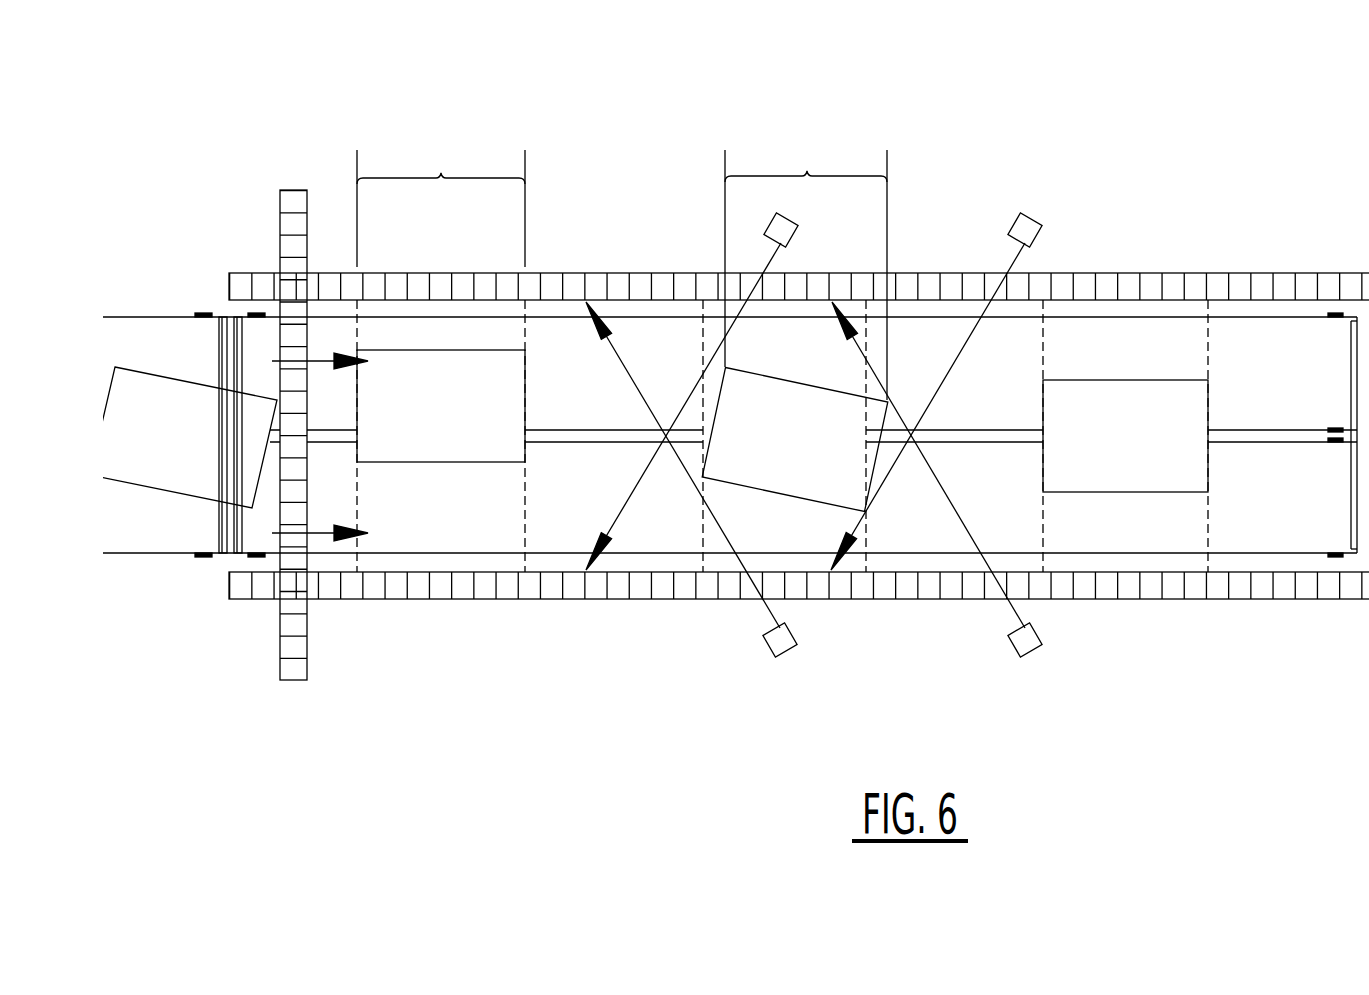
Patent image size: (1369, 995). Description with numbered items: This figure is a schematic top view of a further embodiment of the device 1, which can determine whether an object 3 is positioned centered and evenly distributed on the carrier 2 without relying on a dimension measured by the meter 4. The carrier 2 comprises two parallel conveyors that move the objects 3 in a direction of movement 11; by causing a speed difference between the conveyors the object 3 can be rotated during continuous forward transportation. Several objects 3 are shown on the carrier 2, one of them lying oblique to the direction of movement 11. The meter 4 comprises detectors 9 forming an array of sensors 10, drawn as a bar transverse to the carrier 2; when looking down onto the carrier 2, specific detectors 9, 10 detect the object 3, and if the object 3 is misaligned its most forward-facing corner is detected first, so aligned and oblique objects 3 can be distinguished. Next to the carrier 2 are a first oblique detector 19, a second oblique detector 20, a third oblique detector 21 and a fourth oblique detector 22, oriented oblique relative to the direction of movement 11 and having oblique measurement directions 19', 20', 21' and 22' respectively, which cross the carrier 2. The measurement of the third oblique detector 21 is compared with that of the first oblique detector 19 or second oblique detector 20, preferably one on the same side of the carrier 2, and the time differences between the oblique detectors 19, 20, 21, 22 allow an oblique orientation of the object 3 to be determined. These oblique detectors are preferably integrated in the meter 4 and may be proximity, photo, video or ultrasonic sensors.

The device 1 is at (1225, 140).
The carrier 2 is at (205, 447).
The object 3 is at (147, 463).
The meter 4 is at (185, 275).
The detector 9 is at (297, 402).
The array of sensors 10 is at (297, 512).
The direction of movement 11 is at (306, 448).
The first oblique detector 19 is at (1055, 222).
The oblique measurement direction 19' is at (929, 406).
The second oblique detector 20 is at (1057, 651).
The oblique measurement direction 20' is at (928, 465).
The third oblique detector 21 is at (814, 223).
The oblique measurement direction 21' is at (683, 406).
The fourth oblique detector 22 is at (814, 647).
The oblique measurement direction 22' is at (694, 465).